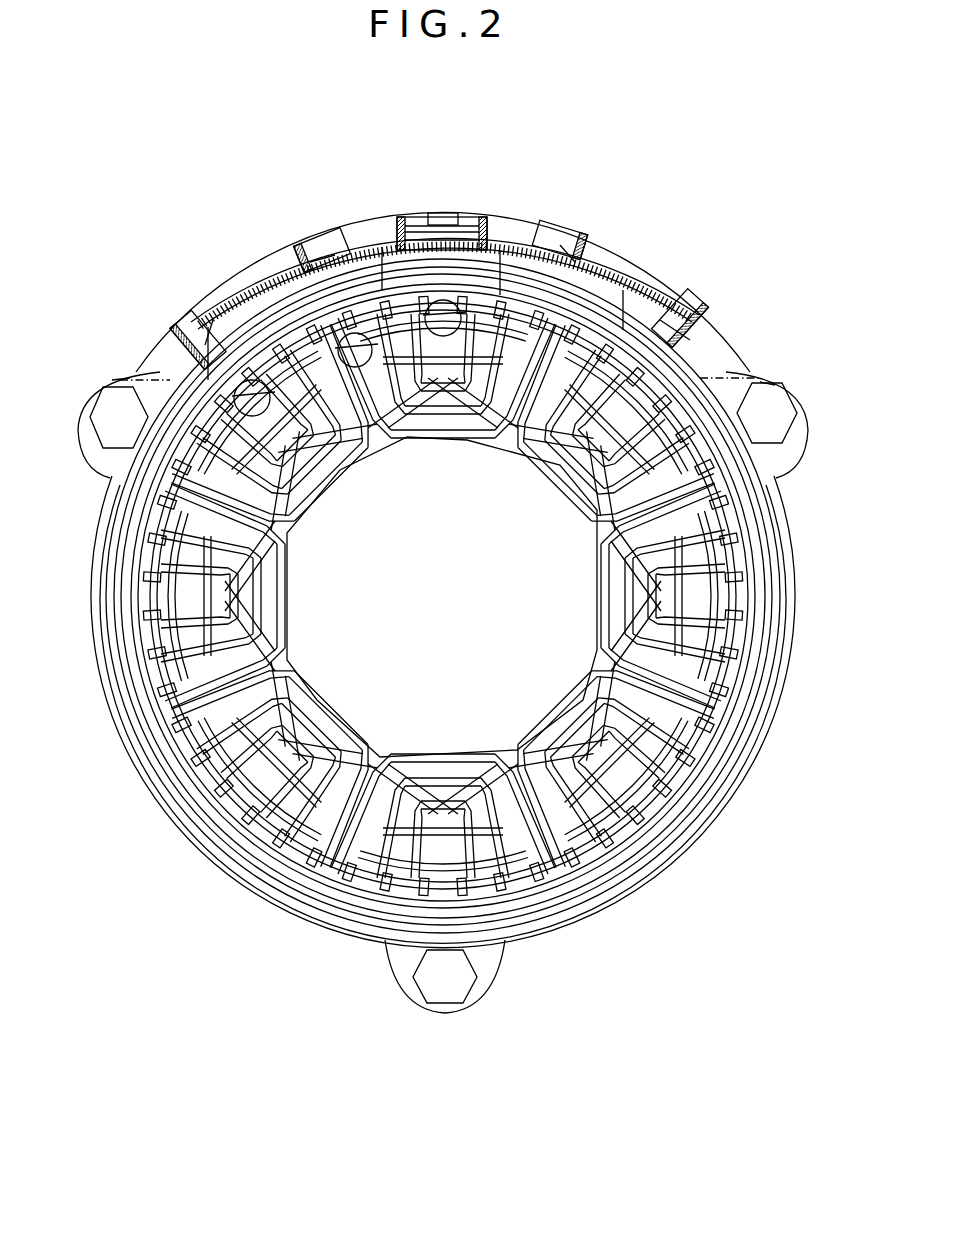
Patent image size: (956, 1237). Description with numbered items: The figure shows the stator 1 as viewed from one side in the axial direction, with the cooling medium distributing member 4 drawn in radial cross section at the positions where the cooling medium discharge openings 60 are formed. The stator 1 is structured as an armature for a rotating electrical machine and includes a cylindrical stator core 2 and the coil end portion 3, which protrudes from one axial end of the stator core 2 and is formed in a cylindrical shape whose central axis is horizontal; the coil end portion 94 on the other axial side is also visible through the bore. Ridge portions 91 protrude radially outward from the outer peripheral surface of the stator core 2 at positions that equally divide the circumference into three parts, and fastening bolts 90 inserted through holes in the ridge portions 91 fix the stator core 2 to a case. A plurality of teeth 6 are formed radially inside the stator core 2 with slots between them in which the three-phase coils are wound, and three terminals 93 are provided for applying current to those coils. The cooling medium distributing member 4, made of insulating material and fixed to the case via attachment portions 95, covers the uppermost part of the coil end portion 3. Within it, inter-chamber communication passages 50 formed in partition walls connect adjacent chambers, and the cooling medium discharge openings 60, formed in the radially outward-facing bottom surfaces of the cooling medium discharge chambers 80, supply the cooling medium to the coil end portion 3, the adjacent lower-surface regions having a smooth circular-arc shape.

The stator 1 is at (163, 190).
The stator core 2 is at (703, 845).
The coil end portion 3 is at (578, 933).
The cooling medium distributing member 4 is at (617, 250).
The teeth 6 is at (245, 850).
The inter-chamber communication passages 50 is at (447, 224).
The cooling medium discharge openings 60 is at (440, 290).
The cooling medium discharge chambers 80 is at (440, 208).
The fastening bolts 90 is at (105, 397).
The ridge portions 91 is at (113, 470).
The terminals 93 is at (438, 338).
The coil end portion 94 is at (300, 633).
The attachment portions 95 is at (112, 380).